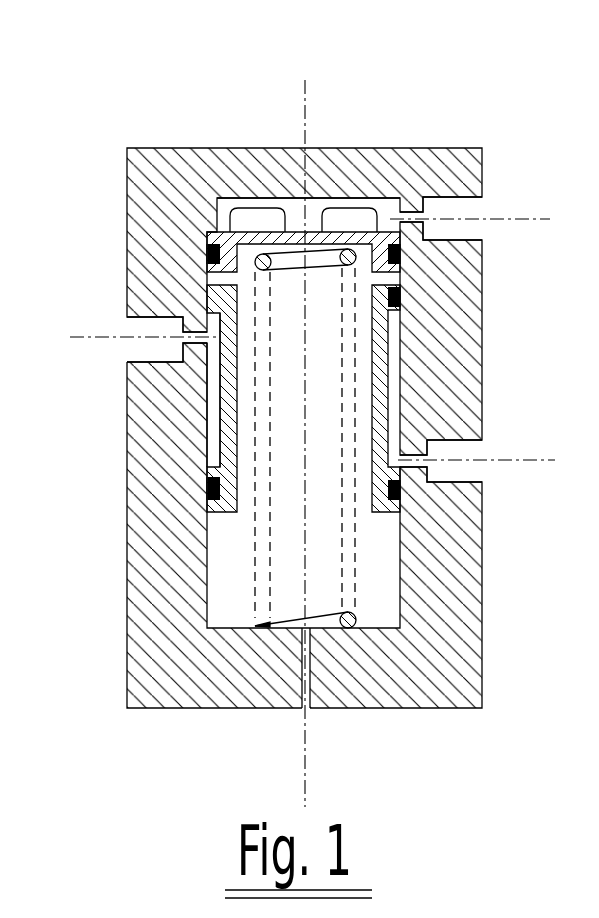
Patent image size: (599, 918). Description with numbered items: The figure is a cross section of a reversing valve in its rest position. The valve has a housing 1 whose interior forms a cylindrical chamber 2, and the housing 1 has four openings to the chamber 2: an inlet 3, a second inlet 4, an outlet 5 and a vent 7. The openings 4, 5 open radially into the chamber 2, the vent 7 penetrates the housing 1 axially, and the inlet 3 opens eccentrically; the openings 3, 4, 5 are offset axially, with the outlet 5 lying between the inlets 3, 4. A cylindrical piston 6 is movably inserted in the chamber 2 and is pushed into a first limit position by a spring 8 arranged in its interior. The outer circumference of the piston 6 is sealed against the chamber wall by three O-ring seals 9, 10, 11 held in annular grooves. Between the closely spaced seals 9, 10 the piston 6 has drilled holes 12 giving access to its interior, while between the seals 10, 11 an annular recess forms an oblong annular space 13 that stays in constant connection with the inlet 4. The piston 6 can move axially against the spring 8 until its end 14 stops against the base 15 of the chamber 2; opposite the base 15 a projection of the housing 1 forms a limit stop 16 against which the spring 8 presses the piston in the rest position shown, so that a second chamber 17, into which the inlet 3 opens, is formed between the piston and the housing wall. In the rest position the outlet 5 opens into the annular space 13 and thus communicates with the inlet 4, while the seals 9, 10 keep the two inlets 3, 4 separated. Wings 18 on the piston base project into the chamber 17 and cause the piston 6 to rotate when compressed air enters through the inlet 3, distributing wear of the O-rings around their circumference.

The housing 1 is at (408, 168).
The cylindrical chamber 2 is at (378, 553).
The inlet 3 is at (460, 212).
The second inlet 4 is at (460, 455).
The outlet 5 is at (130, 347).
The cylindrical piston 6 is at (213, 432).
The vent 7 is at (307, 710).
The spring 8 is at (258, 553).
The seal 9 is at (400, 252).
The seal 10 is at (400, 297).
The seal 11 is at (400, 490).
The drilled holes 12 is at (210, 276).
The annular space 13 is at (398, 390).
The end of the piston 14 is at (217, 527).
The base of the chamber 15 is at (233, 624).
The limit stop 16 is at (212, 218).
The second chamber 17 is at (287, 197).
The wings 18 is at (350, 208).